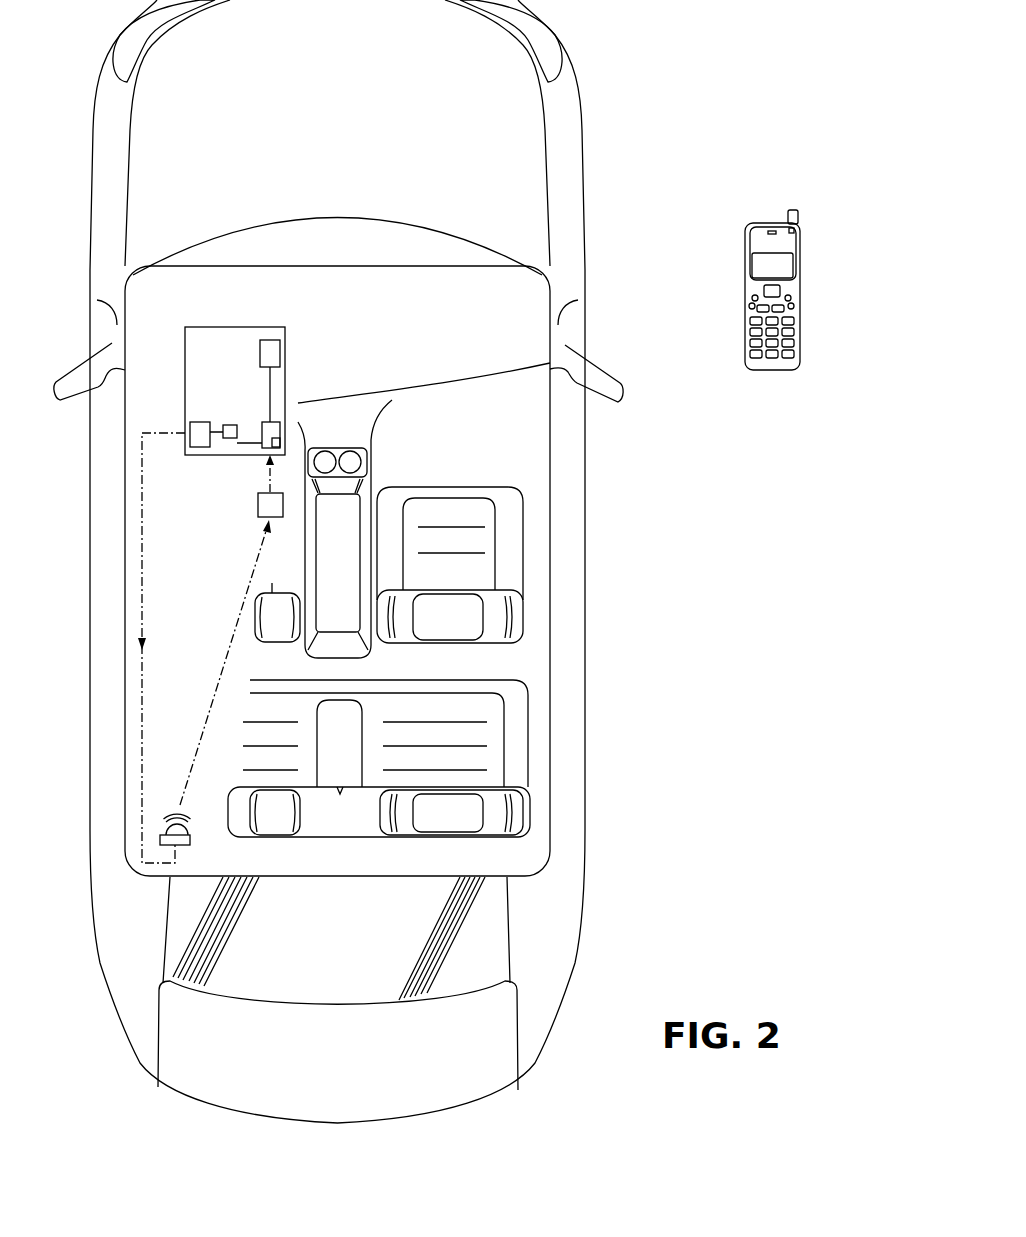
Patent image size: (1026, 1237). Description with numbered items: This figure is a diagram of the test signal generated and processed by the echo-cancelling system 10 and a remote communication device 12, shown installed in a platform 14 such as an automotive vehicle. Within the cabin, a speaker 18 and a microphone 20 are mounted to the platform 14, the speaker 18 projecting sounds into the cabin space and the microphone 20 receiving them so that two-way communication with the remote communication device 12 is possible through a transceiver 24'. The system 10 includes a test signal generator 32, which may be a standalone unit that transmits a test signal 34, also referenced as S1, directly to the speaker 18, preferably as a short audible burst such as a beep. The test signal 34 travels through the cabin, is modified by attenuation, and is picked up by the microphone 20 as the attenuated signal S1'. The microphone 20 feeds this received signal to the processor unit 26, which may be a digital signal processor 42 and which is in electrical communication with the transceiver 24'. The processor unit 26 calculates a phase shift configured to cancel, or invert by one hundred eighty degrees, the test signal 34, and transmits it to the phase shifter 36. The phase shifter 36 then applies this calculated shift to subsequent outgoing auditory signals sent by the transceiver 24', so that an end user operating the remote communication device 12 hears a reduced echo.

The system 10 is at (172, 369).
The remote communication device 12 is at (802, 292).
The platform 14 is at (633, 534).
The speaker 18 is at (190, 840).
The microphone 20 is at (258, 505).
The transceiver 24' is at (300, 372).
The processor unit 26 is at (272, 417).
The digital signal processor 42 is at (271, 435).
The test signal generator 32 is at (226, 425).
The test signal 34 is at (144, 648).
The test signal S1 is at (101, 648).
The attenuated test signal S1' is at (214, 662).
The phase shifter 36 is at (282, 444).